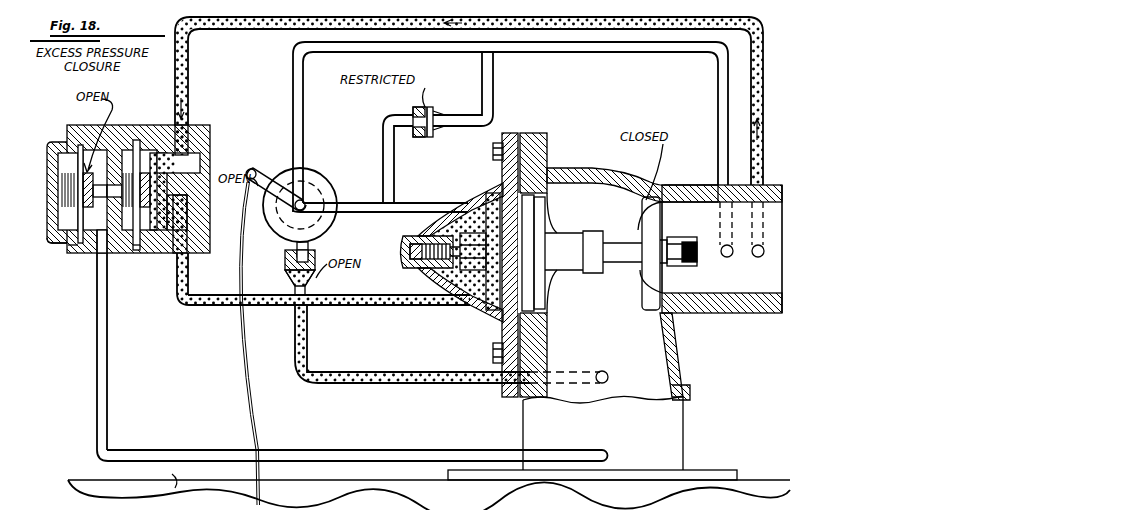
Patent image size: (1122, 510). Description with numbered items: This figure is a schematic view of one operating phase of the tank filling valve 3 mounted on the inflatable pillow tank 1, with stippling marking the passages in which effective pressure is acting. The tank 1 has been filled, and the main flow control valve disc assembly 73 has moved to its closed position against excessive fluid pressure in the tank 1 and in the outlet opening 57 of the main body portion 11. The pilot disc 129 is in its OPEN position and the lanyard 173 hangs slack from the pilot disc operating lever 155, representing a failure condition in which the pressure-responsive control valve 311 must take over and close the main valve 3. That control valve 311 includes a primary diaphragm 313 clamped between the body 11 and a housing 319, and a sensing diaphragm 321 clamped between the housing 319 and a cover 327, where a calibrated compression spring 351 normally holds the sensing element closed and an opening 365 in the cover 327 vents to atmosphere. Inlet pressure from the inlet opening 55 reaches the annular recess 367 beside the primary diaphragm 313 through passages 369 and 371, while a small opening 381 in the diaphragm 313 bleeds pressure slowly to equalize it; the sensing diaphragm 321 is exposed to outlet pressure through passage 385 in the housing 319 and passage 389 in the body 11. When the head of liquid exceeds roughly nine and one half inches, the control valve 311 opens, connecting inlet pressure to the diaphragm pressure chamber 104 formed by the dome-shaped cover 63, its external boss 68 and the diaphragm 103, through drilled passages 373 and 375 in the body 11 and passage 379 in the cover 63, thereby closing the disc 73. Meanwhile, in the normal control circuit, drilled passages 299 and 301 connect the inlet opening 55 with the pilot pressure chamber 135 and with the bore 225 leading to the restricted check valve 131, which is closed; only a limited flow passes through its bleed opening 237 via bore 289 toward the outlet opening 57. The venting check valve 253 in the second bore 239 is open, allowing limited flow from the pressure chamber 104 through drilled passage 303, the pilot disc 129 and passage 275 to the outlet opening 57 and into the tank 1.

The inflatable pillow tank 1 is at (87, 470).
The tank filling main valve 3 is at (600, 153).
The main body portion 11 is at (574, 159).
The inlet opening 55 is at (770, 293).
The outlet opening 57 is at (648, 350).
The dome-shaped cover 63 is at (484, 194).
The external boss 68 is at (412, 246).
The main flow control valve disc assembly 73 is at (634, 283).
The diaphragm 103 is at (545, 205).
The diaphragm pressure chamber 104 is at (452, 277).
The rotatable pilot disc 129 is at (328, 170).
The check valve 131 is at (431, 139).
The pressure chamber 135 is at (293, 73).
The pilot disc operating lever 155 is at (280, 170).
The lanyard 173 is at (247, 395).
The bore 225 is at (493, 73).
The bleed opening 237 is at (434, 113).
The second bore 239 is at (384, 374).
The check valve 253 is at (278, 272).
The passage 275 is at (309, 248).
The bore 289 is at (376, 148).
The drilled passage 299 is at (727, 257).
The drilled passage 301 is at (596, 48).
The drilled passage 303 is at (408, 197).
The pressure-responsive control valve 311 is at (58, 133).
The primary diaphragm 313 is at (150, 165).
The housing 319 is at (106, 290).
The sensing diaphragm 321 is at (97, 150).
The cover 327 is at (55, 244).
The calibrated compression spring 351 is at (78, 254).
The opening 365 is at (55, 200).
The annular recess 367 is at (193, 178).
The passage 369 is at (186, 67).
The passage 371 is at (759, 257).
The drilled passage 373 is at (186, 203).
The drilled passage 375 is at (189, 271).
The passage 379 is at (401, 305).
The small opening 381 is at (138, 254).
The passage 385 is at (98, 354).
The passage 389 is at (340, 450).